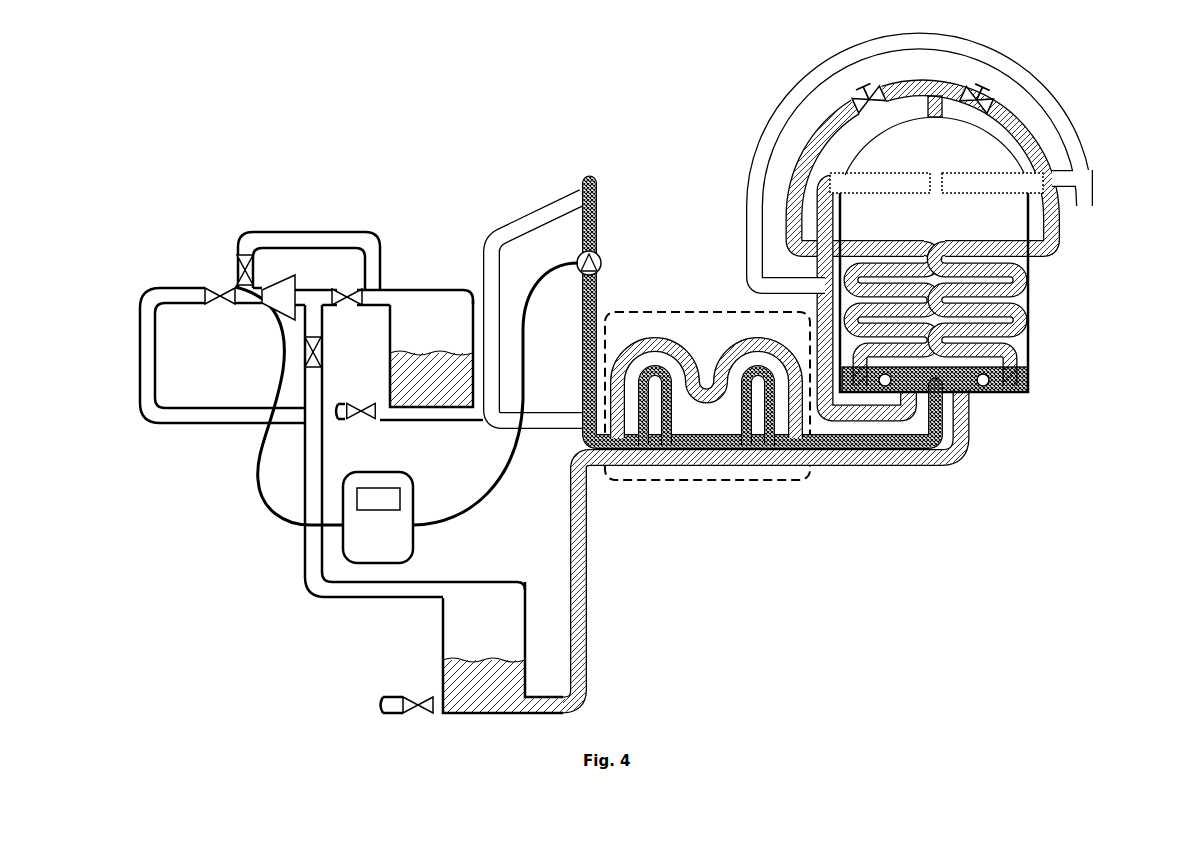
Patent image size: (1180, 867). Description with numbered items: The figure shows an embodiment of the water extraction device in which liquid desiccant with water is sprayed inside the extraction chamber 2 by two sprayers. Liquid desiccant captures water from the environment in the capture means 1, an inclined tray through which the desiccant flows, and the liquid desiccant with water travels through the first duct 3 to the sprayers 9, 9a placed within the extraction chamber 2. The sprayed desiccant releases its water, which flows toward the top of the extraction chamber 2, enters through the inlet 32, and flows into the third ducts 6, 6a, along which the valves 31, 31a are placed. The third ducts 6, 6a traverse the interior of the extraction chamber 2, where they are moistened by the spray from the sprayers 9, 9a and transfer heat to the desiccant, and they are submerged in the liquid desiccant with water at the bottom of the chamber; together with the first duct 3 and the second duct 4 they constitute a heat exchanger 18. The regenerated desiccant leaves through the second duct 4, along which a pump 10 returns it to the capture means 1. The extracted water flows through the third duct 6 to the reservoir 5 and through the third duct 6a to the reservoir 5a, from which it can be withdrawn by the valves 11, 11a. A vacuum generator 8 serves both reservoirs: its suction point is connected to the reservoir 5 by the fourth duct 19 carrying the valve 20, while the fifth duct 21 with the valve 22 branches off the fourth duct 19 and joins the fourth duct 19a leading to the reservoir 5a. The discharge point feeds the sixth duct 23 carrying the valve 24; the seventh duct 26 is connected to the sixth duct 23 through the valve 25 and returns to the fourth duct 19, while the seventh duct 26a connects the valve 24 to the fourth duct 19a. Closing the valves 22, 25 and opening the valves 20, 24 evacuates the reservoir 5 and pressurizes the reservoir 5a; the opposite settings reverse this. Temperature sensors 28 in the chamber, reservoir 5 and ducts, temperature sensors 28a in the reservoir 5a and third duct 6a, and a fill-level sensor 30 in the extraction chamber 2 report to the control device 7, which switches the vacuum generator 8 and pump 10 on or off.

The capture means 1 is at (540, 205).
The extraction chamber 2 is at (760, 72).
The first duct 3 is at (508, 264).
The second duct 4 is at (600, 200).
The reservoir 5 is at (483, 270).
The reservoir 5a is at (525, 597).
The third duct 6 is at (838, 112).
The third duct 6a is at (962, 452).
The control device 7 is at (400, 472).
The vacuum generator 8 is at (280, 280).
The sprayer 9 is at (870, 193).
The sprayer 9a is at (960, 193).
The pump 10 is at (603, 262).
The valve 11 is at (360, 421).
The valve 11a is at (420, 715).
The heat exchanger 18 is at (750, 310).
The fourth duct 19 is at (381, 290).
The fourth duct 19a is at (305, 550).
The valve 20 is at (345, 292).
The fifth duct 21 is at (308, 290).
The valve 22 is at (320, 357).
The sixth duct 23 is at (241, 307).
The valve 24 is at (218, 305).
The valve 25 is at (238, 267).
The seventh duct 26 is at (315, 232).
The seventh duct 26a is at (195, 427).
The temperature sensors 28 is at (411, 324).
The temperature sensors 28a is at (465, 603).
The fill-level sensor 30 is at (1022, 340).
The valve 31 is at (872, 92).
The valve 31a is at (990, 97).
The inlet 32 is at (935, 120).